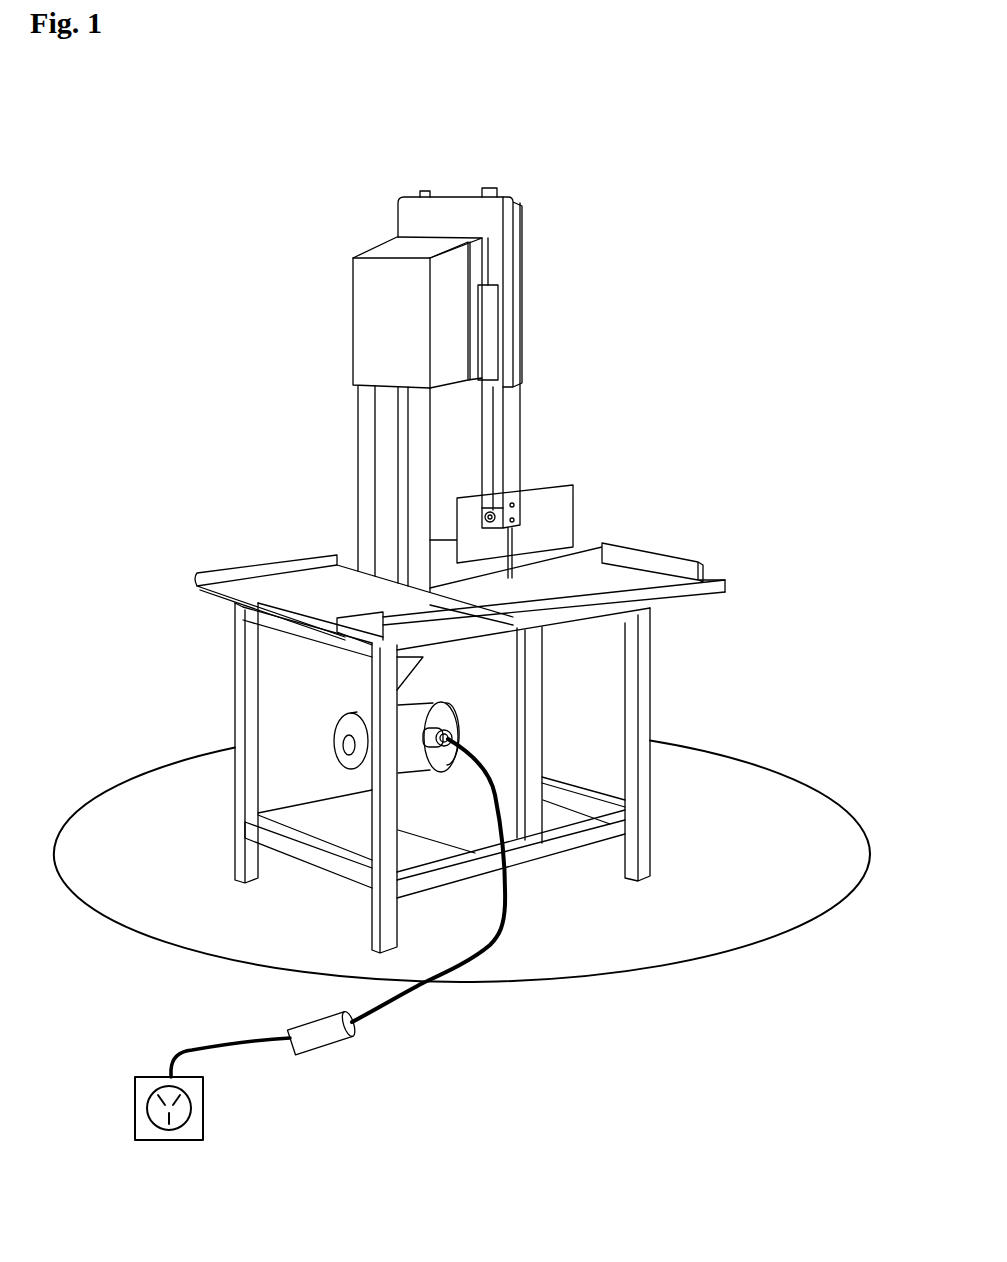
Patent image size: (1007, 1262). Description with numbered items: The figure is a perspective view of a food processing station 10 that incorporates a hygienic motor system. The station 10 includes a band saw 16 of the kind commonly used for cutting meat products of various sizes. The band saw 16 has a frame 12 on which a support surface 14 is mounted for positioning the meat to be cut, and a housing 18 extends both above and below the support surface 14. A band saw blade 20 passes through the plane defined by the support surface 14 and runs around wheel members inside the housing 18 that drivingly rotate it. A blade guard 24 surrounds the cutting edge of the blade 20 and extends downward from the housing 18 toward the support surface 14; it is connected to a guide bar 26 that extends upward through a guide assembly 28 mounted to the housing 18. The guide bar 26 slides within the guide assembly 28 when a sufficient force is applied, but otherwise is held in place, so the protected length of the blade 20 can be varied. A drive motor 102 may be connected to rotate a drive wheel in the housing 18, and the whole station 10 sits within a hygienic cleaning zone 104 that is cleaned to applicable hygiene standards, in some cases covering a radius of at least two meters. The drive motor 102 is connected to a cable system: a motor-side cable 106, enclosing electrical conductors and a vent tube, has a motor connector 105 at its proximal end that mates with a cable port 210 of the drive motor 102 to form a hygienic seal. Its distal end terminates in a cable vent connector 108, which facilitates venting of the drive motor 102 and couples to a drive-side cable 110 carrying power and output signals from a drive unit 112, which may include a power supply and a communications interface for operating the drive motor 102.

The food processing station 10 is at (462, 615).
The frame 12 is at (652, 712).
The support surface 14 is at (501, 570).
The band saw 16 is at (460, 367).
The housing 18 is at (512, 258).
The band saw blade 20 is at (530, 541).
The blade guard 24 is at (520, 413).
The guide bar 26 is at (497, 468).
The guide assembly 28 is at (487, 343).
The drive motor 102 is at (335, 730).
The hygienic cleaning zone 104 is at (190, 775).
The motor connector 105 is at (443, 726).
The motor-side cable 106 is at (413, 1000).
The cable vent connector 108 is at (323, 1040).
The drive-side cable 110 is at (172, 1056).
The drive unit 112 is at (195, 1123).
The cable port 210 is at (470, 699).